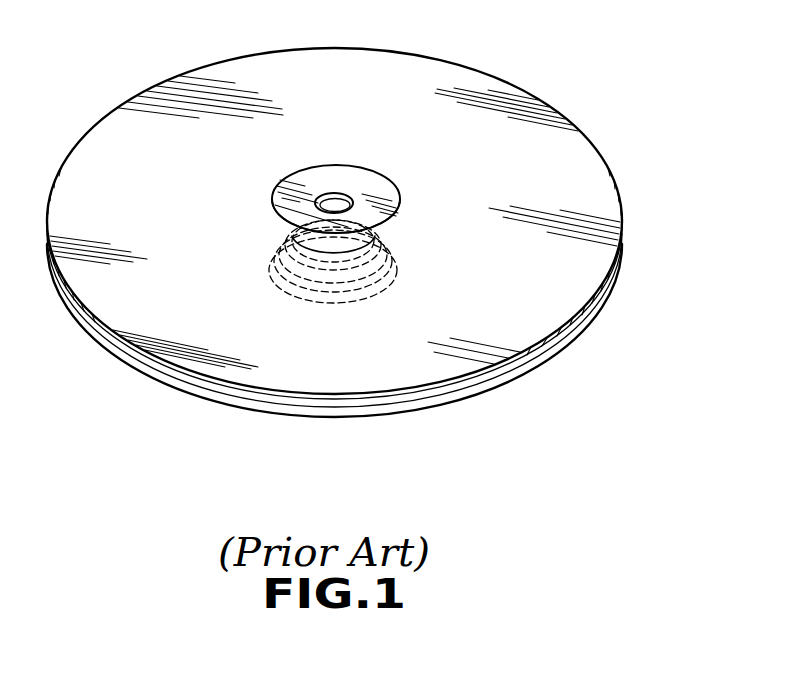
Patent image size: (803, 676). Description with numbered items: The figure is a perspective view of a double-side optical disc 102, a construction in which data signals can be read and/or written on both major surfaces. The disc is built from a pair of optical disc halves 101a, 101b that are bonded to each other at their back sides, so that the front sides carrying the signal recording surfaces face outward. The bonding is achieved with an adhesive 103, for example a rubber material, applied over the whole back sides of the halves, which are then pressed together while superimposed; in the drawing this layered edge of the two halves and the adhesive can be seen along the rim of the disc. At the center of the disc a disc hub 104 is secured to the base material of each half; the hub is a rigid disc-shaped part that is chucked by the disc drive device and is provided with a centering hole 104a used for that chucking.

The double-side optical disc 102 is at (583, 118).
The optical disc half 101a is at (589, 326).
The optical disc half 101b is at (617, 189).
The adhesive 103 is at (395, 408).
The disc hub 104 is at (377, 189).
The centering hole 104a is at (336, 192).